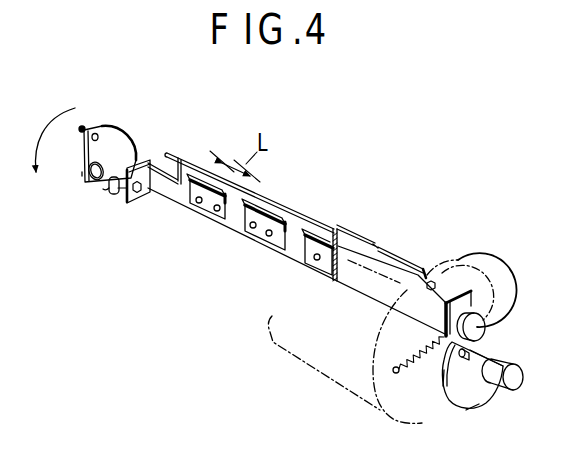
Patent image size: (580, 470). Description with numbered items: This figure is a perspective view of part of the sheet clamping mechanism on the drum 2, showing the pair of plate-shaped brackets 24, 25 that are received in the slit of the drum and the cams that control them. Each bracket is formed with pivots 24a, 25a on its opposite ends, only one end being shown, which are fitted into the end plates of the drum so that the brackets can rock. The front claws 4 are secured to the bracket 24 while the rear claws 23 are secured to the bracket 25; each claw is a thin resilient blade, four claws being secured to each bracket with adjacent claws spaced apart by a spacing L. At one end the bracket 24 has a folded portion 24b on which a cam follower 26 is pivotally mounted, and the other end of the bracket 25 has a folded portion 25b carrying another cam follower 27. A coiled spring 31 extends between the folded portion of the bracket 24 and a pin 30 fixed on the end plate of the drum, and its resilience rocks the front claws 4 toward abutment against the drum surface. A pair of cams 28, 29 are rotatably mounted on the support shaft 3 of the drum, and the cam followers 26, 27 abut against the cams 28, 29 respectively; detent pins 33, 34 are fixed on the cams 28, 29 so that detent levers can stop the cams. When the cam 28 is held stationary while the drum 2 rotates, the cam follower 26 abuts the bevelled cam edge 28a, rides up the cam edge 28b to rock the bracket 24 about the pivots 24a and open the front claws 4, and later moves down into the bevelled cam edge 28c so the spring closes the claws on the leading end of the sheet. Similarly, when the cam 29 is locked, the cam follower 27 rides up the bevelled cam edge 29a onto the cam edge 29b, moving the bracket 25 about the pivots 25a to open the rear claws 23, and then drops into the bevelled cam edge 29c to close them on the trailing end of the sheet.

The drum 2 is at (311, 368).
The support shaft 3 is at (523, 377).
The front claws 4 is at (368, 230).
The rear claws 23 is at (202, 172).
The bracket 24 is at (367, 292).
The pivots 24a is at (437, 279).
The folded portion 24b is at (473, 290).
The bracket 25 is at (250, 241).
The pivots 25a is at (166, 151).
The folded portion 25b is at (142, 205).
The cam follower 26 is at (486, 325).
The cam follower 27 is at (127, 196).
The cam 28 is at (488, 392).
The bevelled cam edge 28a is at (483, 402).
The cam edge 28b is at (441, 391).
The bevelled cam edge 28c is at (500, 357).
The cam 29 is at (84, 160).
The bevelled cam edge 29a is at (104, 191).
The cam edge 29b is at (127, 124).
The bevelled cam edge 29c is at (80, 172).
The pin 30 is at (393, 370).
The coiled spring 31 is at (420, 372).
The detent pin 33 is at (462, 358).
The detent pin 34 is at (83, 126).